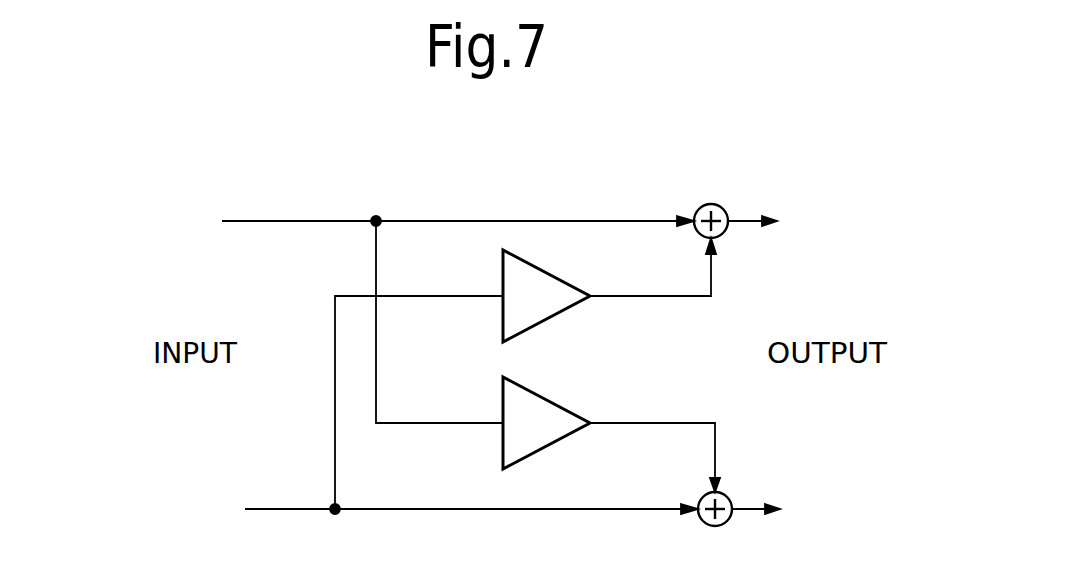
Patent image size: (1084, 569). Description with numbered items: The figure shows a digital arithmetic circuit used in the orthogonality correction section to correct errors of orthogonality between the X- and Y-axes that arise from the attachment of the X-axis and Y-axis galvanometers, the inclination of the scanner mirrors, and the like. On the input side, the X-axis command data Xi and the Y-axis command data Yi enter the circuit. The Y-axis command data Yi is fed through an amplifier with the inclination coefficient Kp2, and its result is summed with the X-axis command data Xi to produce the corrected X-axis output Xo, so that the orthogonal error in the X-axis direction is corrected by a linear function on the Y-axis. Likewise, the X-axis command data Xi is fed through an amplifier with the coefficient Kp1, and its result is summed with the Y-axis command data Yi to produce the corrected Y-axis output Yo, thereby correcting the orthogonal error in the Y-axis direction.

The inclination coefficient Kp1 is at (546, 423).
The inclination coefficient Kp2 is at (546, 296).
The X-axis command data Xi is at (442, 313).
The Y-axis command data Yi is at (443, 410).
The X-axis data after orthogonality correction Xo is at (762, 220).
The Y-axis data after orthogonality correction Yo is at (763, 509).